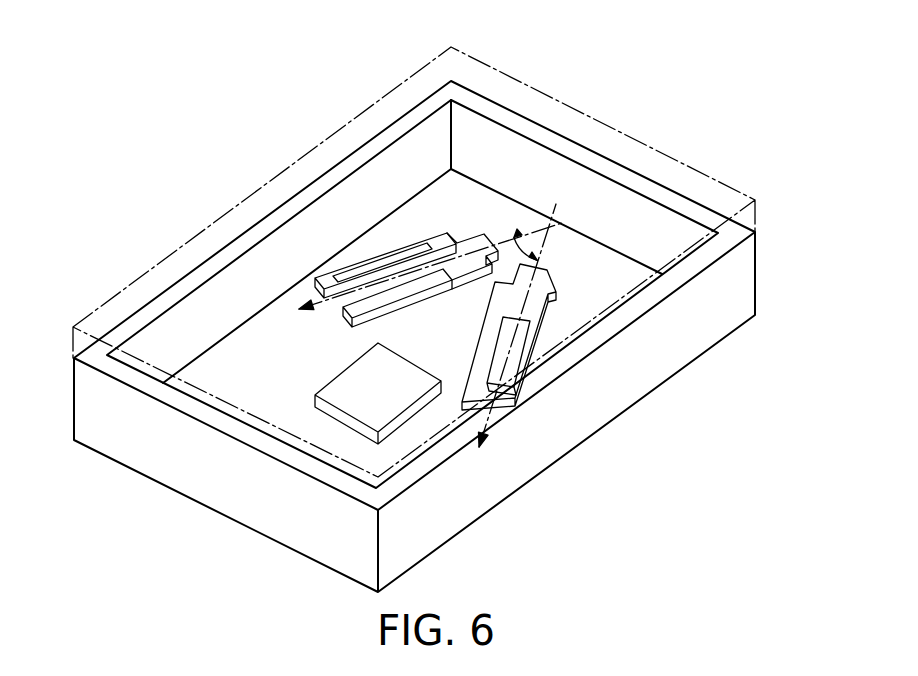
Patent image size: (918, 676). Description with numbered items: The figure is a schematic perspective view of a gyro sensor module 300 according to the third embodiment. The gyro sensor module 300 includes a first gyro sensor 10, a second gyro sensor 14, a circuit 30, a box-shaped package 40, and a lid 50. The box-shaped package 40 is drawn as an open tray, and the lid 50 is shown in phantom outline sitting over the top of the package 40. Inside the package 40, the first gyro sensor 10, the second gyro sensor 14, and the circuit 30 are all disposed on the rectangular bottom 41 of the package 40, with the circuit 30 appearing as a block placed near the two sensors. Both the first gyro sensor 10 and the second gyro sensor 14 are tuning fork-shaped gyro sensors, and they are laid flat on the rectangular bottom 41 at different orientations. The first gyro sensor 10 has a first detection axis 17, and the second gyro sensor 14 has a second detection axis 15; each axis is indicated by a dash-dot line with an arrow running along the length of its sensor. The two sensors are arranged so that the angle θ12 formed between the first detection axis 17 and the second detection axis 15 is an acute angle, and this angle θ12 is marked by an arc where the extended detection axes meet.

The gyro sensor module 300 is at (449, 306).
The box-shaped package 40 is at (757, 268).
The rectangular bottom 41 is at (470, 185).
The lid 50 is at (741, 190).
The second gyro sensor 14 is at (437, 248).
The second detection axis 15 is at (332, 318).
The first gyro sensor 10 is at (548, 345).
The first detection axis 17 is at (497, 420).
The angle θ 12 is at (554, 262).
The circuit 30 is at (422, 375).